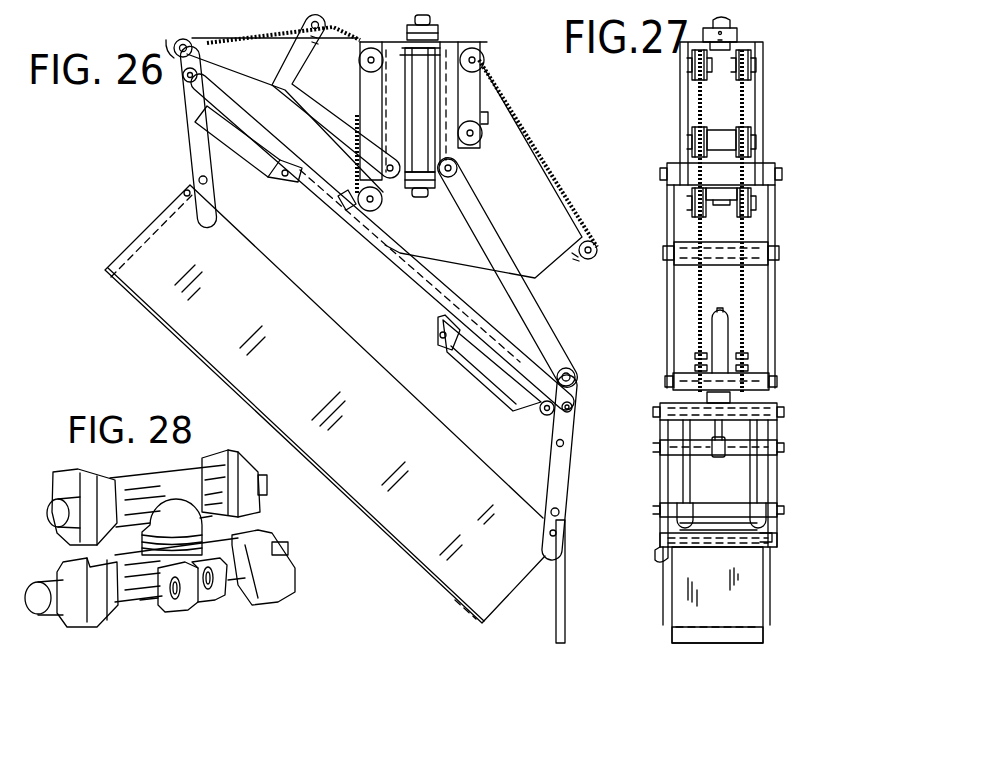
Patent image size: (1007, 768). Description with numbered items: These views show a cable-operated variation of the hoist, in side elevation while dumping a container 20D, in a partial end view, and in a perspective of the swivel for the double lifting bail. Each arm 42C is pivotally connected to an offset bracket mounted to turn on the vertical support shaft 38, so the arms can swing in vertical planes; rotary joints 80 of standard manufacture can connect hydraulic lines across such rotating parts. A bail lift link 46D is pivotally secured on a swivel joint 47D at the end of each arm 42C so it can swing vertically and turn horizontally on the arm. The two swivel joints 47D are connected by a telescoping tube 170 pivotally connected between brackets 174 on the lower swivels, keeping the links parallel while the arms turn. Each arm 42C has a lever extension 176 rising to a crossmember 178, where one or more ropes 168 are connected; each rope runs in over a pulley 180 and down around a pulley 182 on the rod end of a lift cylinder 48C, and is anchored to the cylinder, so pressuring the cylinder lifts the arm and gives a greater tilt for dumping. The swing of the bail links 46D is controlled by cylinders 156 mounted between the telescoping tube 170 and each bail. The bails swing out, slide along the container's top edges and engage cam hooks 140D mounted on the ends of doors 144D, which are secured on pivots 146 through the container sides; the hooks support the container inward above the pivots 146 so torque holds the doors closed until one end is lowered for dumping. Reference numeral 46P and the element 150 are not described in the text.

In FIG. 26, the container 20D is at (120, 252).
In FIG. 27, the container 20D is at (763, 615).
In FIG. 26, the vertical support shaft 38 is at (423, 197).
In FIG. 27, the vertical support shaft 38 is at (731, 24).
In FIG. 26, the arm 42C is at (210, 58).
In FIG. 27, the arm 42C is at (668, 285).
In FIG. 28, the arm 42C is at (92, 485).
In FIG. 26, the bail lift link 46D is at (192, 162).
In FIG. 27, the bail lift link 46D is at (752, 490).
In FIG. 28, the bail lift link 46D is at (292, 574).
In FIG. 27, the pivot pin 46P is at (660, 412).
In FIG. 28, the pivot pin 46P is at (39, 580).
In FIG. 26, the swivel joint 47D is at (185, 33).
In FIG. 27, the swivel joint 47D is at (706, 397).
In FIG. 28, the swivel joint 47D is at (260, 522).
In FIG. 26, the lift cylinder 48C is at (305, 160).
In FIG. 26, the rotary joint 80 is at (407, 42).
In FIG. 27, the rotary joint 80 is at (738, 42).
In FIG. 26, the cam hook 140D is at (214, 197).
In FIG. 27, the cam hook 140D is at (742, 524).
In FIG. 26, the door 144D is at (556, 633).
In FIG. 27, the door 144D is at (763, 636).
In FIG. 26, the pivot 146 is at (184, 193).
In FIG. 27, the pivot 146 is at (772, 540).
In FIG. 27, the bolt 150 is at (770, 512).
In FIG. 26, the cylinder 156 is at (230, 158).
In FIG. 26, the rope 168 is at (269, 27).
In FIG. 27, the rope 168 is at (740, 96).
In FIG. 26, the telescoping tube 170 is at (395, 268).
In FIG. 27, the telescoping tube 170 is at (712, 340).
In FIG. 26, the bracket 174 is at (191, 83).
In FIG. 28, the bracket 174 is at (173, 612).
In FIG. 26, the lever extension 176 is at (294, 90).
In FIG. 27, the crossmember 178 is at (688, 242).
In FIG. 26, the pulley 180 is at (360, 60).
In FIG. 27, the pulley 180 is at (690, 70).
In FIG. 26, the pulley 182 is at (375, 212).
In FIG. 27, the pulley 182 is at (690, 142).